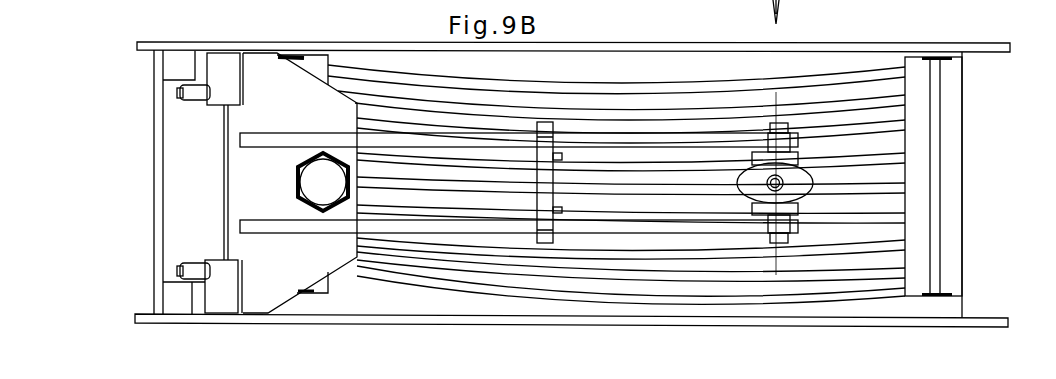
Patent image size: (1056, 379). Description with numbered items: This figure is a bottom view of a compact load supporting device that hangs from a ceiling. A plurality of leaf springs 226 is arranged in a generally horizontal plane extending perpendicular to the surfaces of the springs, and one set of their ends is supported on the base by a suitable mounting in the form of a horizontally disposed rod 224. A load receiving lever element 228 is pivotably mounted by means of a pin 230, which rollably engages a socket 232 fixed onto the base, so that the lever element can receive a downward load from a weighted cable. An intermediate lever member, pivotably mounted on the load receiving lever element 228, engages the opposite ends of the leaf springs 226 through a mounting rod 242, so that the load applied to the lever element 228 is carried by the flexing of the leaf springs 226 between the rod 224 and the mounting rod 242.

The horizontally disposed rod 224 is at (937, 62).
The leaf springs 226 is at (558, 112).
The load receiving lever element 228 is at (288, 227).
The pin 230 is at (232, 63).
The socket 232 is at (185, 62).
The mounting rod 242 is at (297, 63).